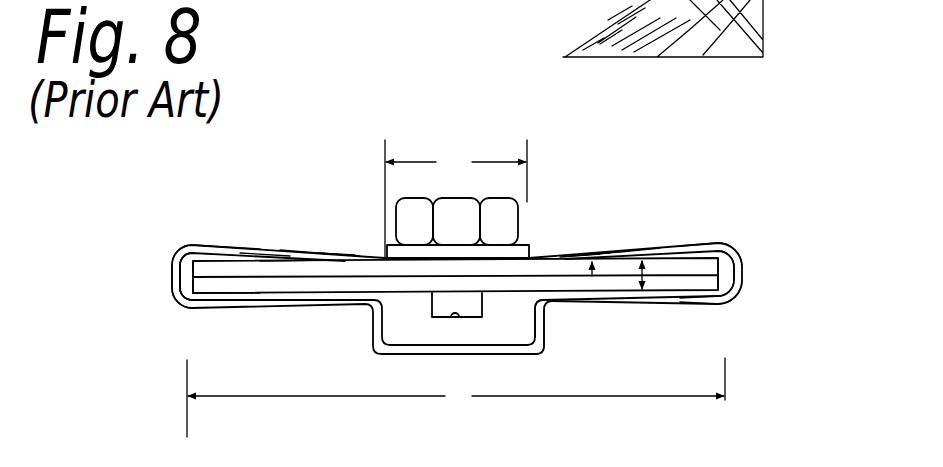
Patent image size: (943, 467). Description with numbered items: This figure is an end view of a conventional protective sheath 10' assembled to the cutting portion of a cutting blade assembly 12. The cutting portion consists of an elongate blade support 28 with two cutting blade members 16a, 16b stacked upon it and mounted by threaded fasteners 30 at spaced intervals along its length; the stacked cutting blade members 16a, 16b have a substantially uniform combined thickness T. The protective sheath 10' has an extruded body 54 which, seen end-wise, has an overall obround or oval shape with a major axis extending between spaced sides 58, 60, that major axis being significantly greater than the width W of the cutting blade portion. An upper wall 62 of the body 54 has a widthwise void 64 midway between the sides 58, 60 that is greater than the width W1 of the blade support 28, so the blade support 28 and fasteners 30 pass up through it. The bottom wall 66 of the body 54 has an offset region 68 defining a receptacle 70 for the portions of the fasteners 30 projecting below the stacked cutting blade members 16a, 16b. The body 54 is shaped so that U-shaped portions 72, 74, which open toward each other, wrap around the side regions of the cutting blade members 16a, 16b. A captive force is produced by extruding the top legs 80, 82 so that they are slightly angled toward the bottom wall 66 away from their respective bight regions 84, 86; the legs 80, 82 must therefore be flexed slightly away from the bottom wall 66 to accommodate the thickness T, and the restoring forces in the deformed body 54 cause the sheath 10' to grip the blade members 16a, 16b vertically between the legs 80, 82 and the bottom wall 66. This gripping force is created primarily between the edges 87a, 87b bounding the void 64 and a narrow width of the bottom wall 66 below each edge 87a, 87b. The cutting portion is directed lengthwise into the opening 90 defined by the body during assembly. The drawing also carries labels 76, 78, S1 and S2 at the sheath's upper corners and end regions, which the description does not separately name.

The protective sheath 10' is at (457, 235).
The cutting blade assembly 12 is at (534, 274).
The cutting blade member 16a is at (289, 256).
The cutting blade member 16b is at (218, 286).
The blade support 28 is at (533, 250).
The threaded fasteners 30 is at (517, 222).
The body 54 is at (740, 264).
The side 58 is at (175, 283).
The side 60 is at (723, 298).
The upper wall 62 is at (597, 252).
The void 64 is at (338, 252).
The bottom wall 66 is at (547, 297).
The offset region 68 is at (413, 350).
The receptacle 70 is at (576, 251).
The U-shaped portion 72 is at (723, 306).
The U-shaped portion 74 is at (228, 245).
The top corner 76 is at (703, 247).
The top wall 78 is at (257, 250).
The top leg 80 is at (637, 248).
The top leg 82 is at (298, 252).
The bight region 84 is at (731, 250).
The bight region 86 is at (175, 272).
The edge 87a is at (335, 253).
The edge 87b is at (584, 254).
The opening 90 is at (592, 276).
The space at first end S1 is at (187, 262).
The space at second end S2 is at (726, 277).
The combined thickness T is at (640, 279).
The width of the cutting blade portion W is at (456, 397).
The width of the blade support W1 is at (456, 198).